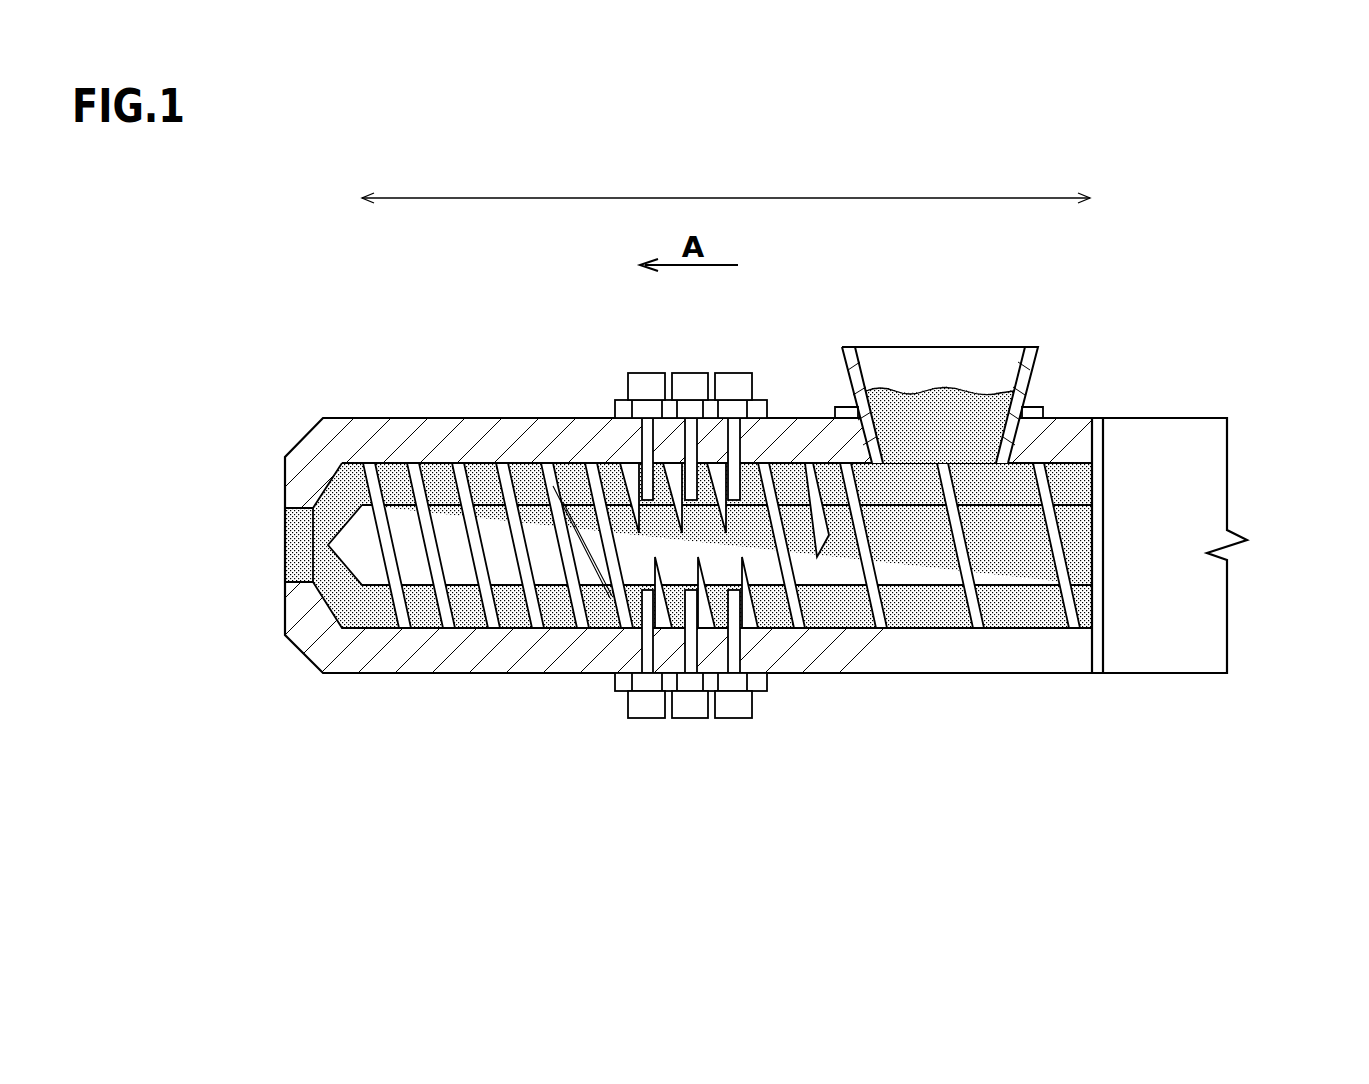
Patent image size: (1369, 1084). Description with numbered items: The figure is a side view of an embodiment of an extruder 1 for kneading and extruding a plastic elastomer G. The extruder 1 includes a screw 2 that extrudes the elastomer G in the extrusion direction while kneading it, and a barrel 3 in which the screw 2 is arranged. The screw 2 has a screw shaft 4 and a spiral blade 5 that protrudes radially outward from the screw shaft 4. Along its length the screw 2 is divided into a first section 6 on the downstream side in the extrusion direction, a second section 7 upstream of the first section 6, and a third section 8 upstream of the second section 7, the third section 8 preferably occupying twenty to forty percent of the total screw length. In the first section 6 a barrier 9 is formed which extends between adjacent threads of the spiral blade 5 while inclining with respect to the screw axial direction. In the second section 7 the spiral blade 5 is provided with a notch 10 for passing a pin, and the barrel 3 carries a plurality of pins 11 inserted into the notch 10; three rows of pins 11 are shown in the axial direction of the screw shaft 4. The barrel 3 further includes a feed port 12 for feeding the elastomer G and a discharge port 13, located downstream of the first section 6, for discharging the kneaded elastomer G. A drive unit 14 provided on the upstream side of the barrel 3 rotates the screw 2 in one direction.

The extruder 1 is at (1207, 315).
The screw 2 is at (710, 640).
The barrel 3 is at (468, 440).
The screw shaft 4 is at (922, 563).
The spiral blade 5 is at (868, 560).
The first section 6 is at (362, 192).
The second section 7 is at (673, 608).
The third section 8 is at (1090, 192).
The barrier 9 is at (575, 520).
The notch 10 is at (742, 536).
The pins 11 is at (652, 578).
The feed port 12 is at (939, 349).
The discharge port 13 is at (277, 542).
The drive unit 14 is at (1183, 473).
The plastic elastomer G is at (950, 423).